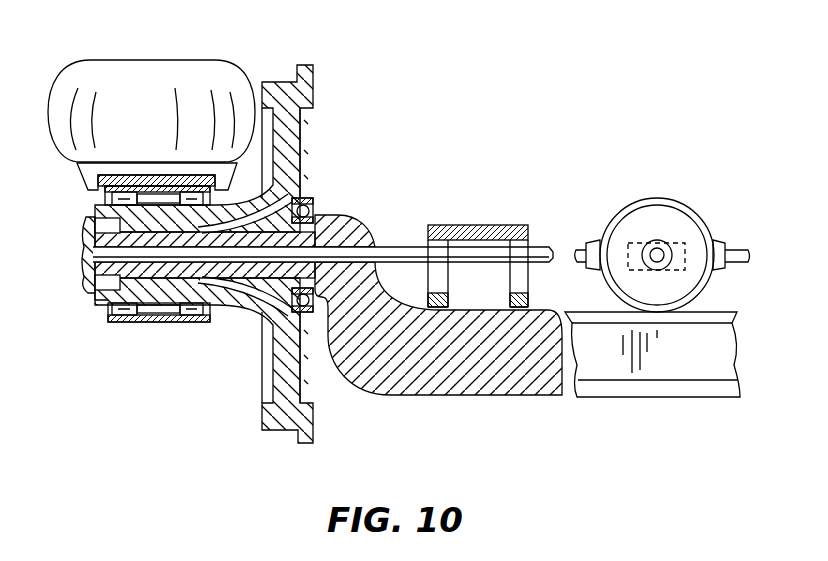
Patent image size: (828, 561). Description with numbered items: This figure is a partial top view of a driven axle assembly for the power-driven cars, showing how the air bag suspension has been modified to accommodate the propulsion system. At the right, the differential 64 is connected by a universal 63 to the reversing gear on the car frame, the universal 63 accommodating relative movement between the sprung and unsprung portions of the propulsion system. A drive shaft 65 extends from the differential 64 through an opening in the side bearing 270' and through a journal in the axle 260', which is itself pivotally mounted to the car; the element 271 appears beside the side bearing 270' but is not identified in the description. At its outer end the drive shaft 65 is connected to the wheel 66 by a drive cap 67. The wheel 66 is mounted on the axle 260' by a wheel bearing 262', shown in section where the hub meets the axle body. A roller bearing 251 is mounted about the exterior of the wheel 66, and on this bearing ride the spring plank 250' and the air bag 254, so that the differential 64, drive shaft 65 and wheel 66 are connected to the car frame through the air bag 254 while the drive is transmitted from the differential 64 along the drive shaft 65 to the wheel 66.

The air bag 254 is at (205, 68).
The wheel 66 is at (285, 82).
The spring plank 250' is at (180, 193).
The roller bearing 251 is at (181, 331).
The wheel bearing 262' is at (339, 240).
The drive shaft 65 is at (403, 247).
The side bearing 270' is at (497, 211).
The spool flange 271 is at (523, 278).
The axle 260' is at (438, 325).
The differential 64 is at (627, 232).
The universal 63 is at (692, 245).
The drive cap 67 is at (84, 294).